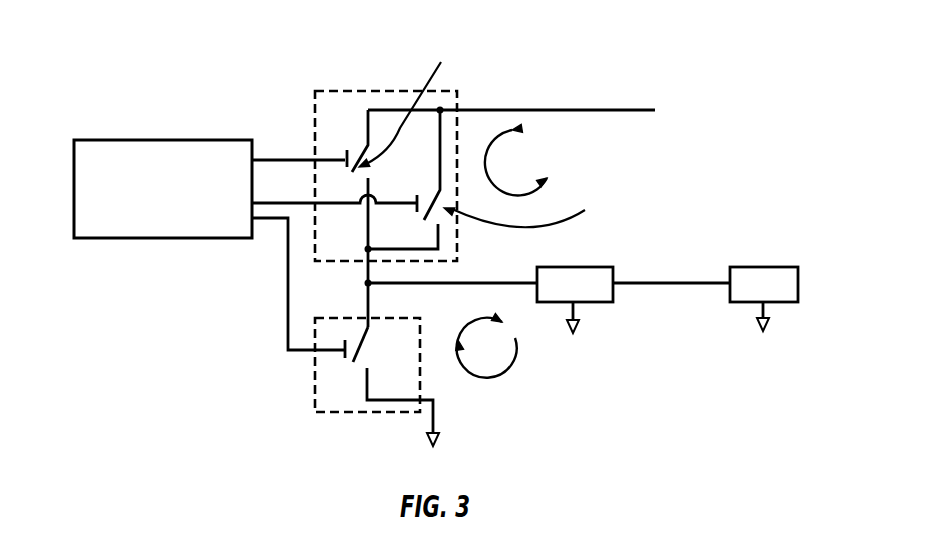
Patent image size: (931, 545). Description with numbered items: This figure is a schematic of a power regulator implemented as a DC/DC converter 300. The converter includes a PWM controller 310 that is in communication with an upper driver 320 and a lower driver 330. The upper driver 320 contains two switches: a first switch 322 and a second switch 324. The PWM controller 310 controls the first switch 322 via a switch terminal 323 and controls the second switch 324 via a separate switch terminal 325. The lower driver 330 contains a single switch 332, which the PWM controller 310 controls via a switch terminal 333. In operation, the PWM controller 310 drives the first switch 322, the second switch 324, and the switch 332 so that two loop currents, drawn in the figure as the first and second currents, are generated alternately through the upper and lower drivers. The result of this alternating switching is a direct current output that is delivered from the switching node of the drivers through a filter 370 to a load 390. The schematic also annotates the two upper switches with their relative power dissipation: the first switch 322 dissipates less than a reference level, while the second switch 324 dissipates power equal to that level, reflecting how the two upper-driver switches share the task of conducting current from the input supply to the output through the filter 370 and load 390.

The DC/DC converter 300 is at (168, 38).
The PWM controller 310 is at (96, 140).
The upper driver 320 is at (333, 91).
The first switch 322 is at (352, 138).
The switch terminal 323 is at (337, 150).
The second switch 324 is at (426, 182).
The switch terminal 325 is at (410, 211).
The lower driver 330 is at (330, 412).
The switch 332 is at (372, 357).
The switch terminal 333 is at (344, 342).
The filter 370 is at (583, 267).
The load 390 is at (757, 267).